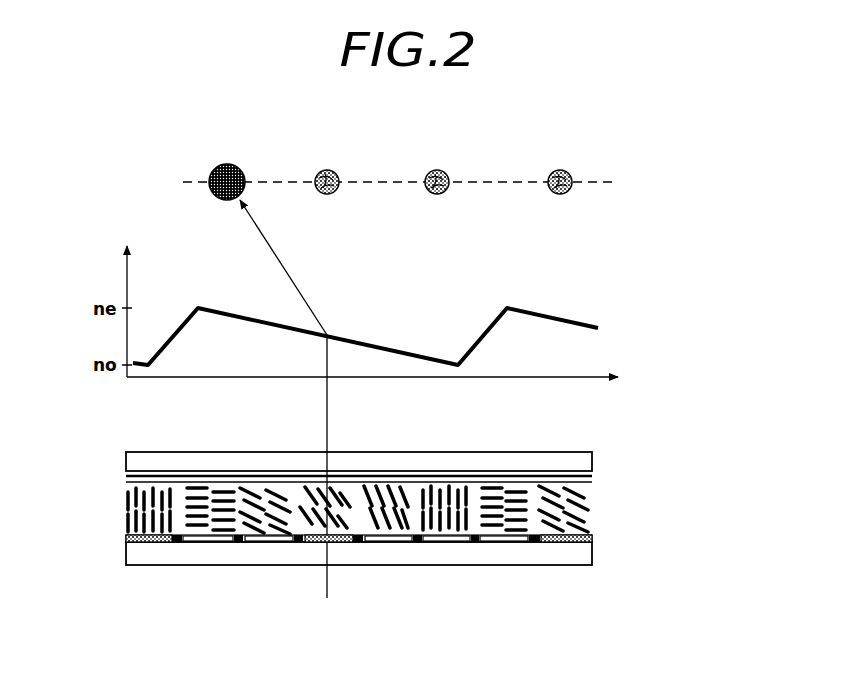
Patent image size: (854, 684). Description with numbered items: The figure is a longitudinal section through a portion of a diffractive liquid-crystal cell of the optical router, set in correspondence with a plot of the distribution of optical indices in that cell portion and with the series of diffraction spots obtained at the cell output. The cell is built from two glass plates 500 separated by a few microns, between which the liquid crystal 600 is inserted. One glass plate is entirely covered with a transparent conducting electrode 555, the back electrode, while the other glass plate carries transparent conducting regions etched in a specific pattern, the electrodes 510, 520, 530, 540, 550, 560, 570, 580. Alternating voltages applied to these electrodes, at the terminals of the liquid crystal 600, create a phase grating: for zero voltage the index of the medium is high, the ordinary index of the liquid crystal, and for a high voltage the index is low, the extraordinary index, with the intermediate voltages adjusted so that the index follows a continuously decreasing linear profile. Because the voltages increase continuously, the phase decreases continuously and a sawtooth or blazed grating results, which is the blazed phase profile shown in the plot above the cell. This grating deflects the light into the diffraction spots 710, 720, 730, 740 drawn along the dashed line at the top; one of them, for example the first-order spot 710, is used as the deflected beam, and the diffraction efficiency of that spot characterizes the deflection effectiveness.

The glass plate 500 is at (126, 457).
The transparent conducting electrode 555 is at (126, 483).
The liquid crystal 600 is at (583, 506).
The electrode 510 is at (148, 542).
The electrode 520 is at (207, 542).
The electrode 530 is at (265, 542).
The electrode 540 is at (320, 542).
The electrode 550 is at (385, 542).
The electrode 560 is at (447, 542).
The electrode 570 is at (503, 542).
The electrode 580 is at (565, 542).
The diffraction spot 710 is at (228, 164).
The diffraction spot 720 is at (327, 170).
The diffraction spot 730 is at (438, 170).
The diffraction spot 740 is at (560, 170).